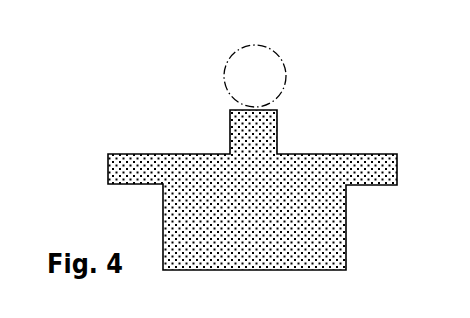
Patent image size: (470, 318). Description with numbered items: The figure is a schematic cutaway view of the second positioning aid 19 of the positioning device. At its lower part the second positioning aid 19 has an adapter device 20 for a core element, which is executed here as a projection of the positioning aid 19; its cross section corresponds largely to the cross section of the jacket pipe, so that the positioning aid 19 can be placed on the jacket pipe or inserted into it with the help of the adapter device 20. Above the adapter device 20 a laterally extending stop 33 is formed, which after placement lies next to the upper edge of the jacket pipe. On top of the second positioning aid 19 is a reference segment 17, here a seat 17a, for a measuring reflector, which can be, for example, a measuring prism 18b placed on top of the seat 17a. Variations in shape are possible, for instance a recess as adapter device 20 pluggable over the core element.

The reference segment 17 is at (150, 126).
The seat 17a is at (250, 133).
The measuring prism 18b is at (233, 79).
The second positioning aid 19 is at (227, 160).
The adapter device 20 is at (198, 222).
The stop 33 is at (365, 158).